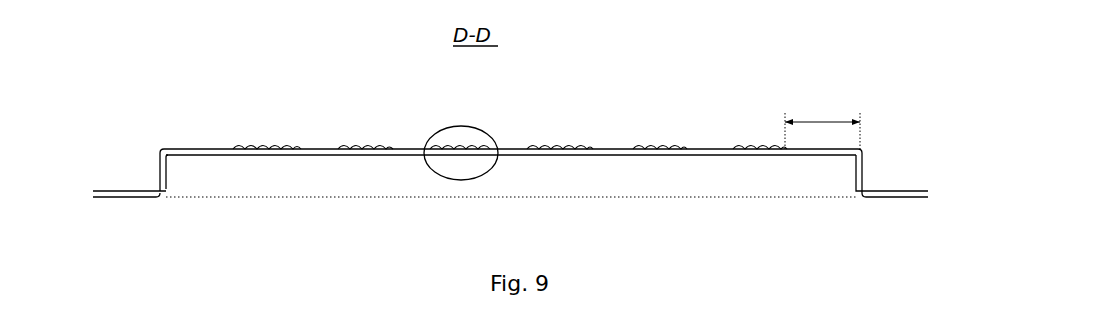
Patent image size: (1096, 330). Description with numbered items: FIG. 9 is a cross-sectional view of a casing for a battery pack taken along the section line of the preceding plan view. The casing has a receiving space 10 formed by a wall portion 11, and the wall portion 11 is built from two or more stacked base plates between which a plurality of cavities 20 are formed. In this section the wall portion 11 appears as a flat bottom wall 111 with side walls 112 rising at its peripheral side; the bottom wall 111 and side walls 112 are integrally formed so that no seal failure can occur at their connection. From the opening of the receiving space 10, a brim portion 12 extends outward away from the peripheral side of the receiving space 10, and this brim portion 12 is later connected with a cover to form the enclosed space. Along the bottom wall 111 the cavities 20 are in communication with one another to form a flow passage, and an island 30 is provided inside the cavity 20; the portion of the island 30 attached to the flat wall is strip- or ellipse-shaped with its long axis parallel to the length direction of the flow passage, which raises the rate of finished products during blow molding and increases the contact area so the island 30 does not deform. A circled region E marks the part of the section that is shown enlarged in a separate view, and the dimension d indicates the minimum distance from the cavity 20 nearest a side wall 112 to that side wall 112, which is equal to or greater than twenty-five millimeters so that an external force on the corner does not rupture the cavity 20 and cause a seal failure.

The receiving space 10 is at (611, 161).
The wall portion 11 is at (157, 137).
The bottom wall 111 is at (222, 150).
The side walls 112 is at (160, 165).
The brim portion 12 is at (890, 196).
The cavity 20 is at (252, 150).
The island 30 is at (363, 150).
The region E is at (486, 130).
The minimum distance d is at (822, 122).